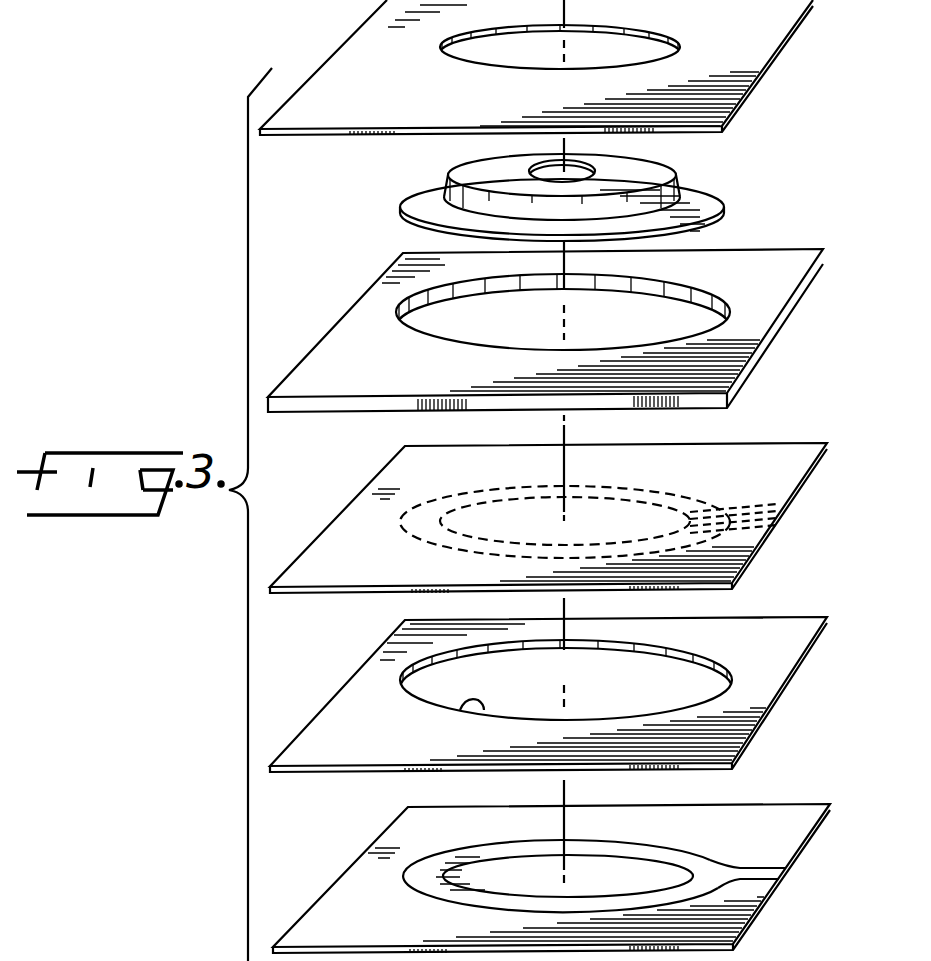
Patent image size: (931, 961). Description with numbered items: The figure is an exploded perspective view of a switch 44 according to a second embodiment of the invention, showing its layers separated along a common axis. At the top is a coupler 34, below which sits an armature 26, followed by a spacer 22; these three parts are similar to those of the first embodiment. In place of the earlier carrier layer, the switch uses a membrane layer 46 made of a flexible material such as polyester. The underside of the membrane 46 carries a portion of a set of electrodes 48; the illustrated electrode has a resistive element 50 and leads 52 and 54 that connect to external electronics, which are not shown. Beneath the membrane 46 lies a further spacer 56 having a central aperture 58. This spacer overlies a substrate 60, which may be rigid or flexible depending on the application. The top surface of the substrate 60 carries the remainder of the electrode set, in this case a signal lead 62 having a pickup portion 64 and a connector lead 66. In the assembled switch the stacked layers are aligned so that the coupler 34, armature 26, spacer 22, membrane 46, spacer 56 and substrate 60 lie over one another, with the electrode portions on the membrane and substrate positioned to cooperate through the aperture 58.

The spacer 22 is at (345, 330).
The armature 26 is at (402, 204).
The coupler 34 is at (358, 45).
The switch 44 is at (808, 418).
The membrane layer 46 is at (357, 513).
The set of electrodes 48 is at (430, 532).
The resistive element 50 is at (464, 497).
The lead 52 is at (768, 507).
The lead 54 is at (758, 532).
The spacer 56 is at (345, 700).
The central aperture 58 is at (470, 706).
The substrate 60 is at (363, 868).
The signal lead 62 is at (416, 893).
The pickup portion 64 is at (462, 853).
The connector lead 66 is at (773, 867).